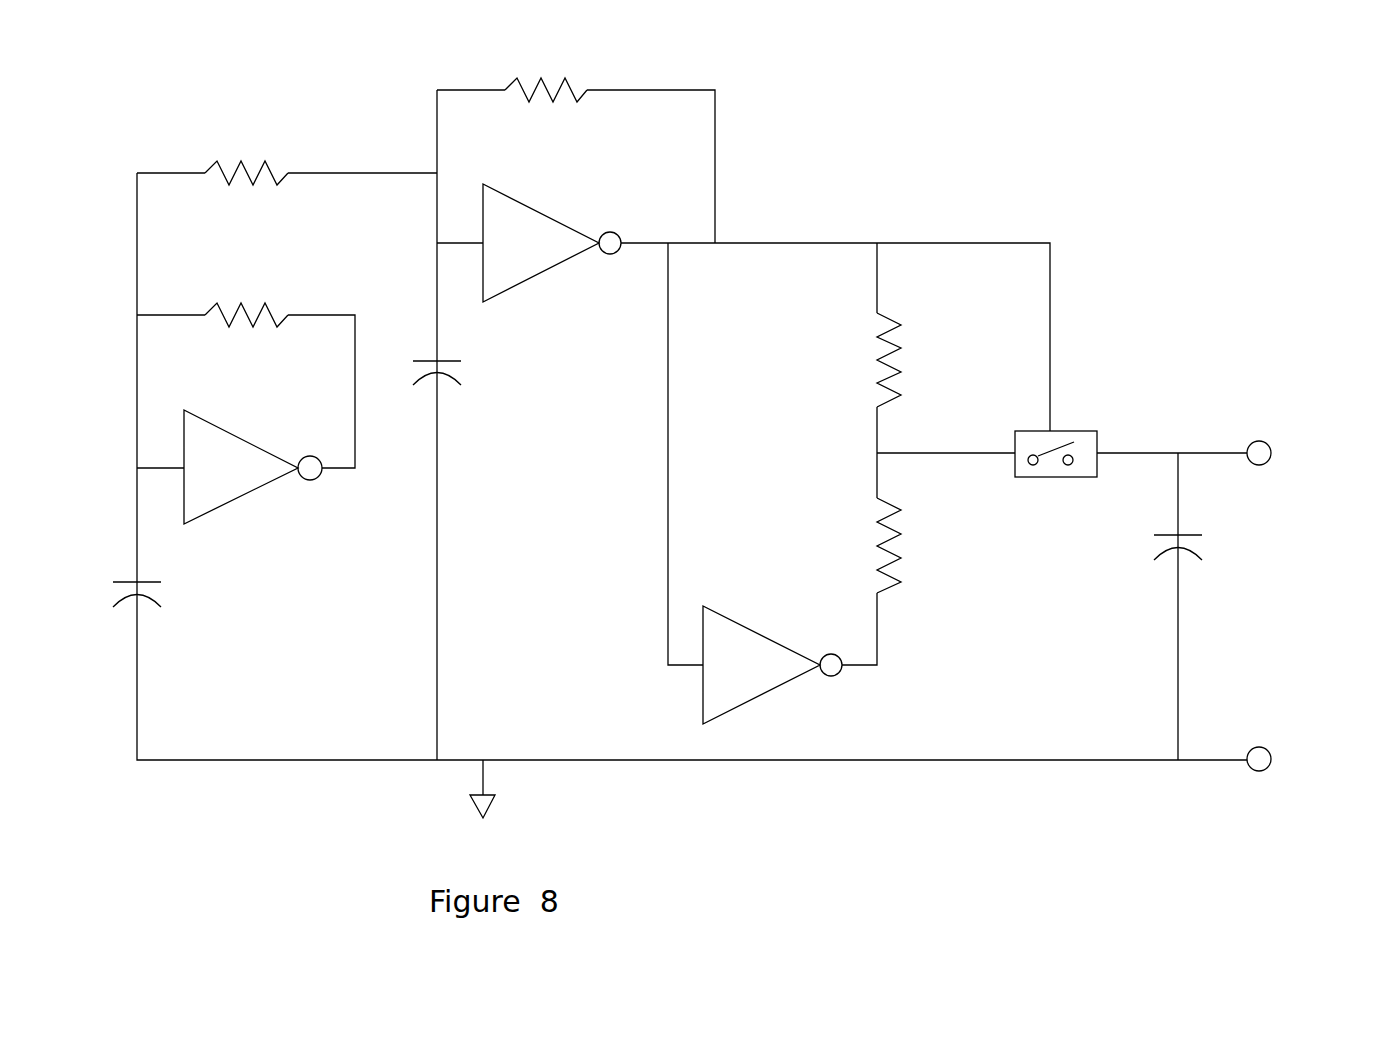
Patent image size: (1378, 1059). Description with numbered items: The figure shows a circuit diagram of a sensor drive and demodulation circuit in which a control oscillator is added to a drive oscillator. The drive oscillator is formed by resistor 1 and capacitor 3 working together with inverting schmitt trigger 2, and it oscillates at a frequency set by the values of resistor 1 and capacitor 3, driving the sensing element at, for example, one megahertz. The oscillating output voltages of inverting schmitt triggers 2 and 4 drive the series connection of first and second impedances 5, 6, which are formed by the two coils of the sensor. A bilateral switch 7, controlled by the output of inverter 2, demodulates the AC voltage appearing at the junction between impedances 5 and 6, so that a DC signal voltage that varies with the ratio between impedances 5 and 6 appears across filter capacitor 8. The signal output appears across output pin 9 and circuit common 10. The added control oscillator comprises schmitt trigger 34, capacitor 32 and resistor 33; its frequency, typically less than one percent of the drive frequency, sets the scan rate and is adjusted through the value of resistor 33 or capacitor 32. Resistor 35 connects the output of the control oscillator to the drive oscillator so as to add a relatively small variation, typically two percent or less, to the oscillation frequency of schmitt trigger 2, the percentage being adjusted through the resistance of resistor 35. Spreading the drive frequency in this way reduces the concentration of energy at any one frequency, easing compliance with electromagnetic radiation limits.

The resistor 1 is at (541, 71).
The inverting schmitt trigger 2 is at (537, 196).
The capacitor 3 is at (449, 352).
The inverting schmitt trigger 4 is at (765, 621).
The first impedance 5 is at (868, 339).
The second impedance 6 is at (869, 526).
The bilateral switch 7 is at (1065, 421).
The filter capacitor 8 is at (1187, 522).
The output pin 9 is at (1269, 435).
The circuit common 10 is at (1272, 741).
The capacitor 32 is at (150, 576).
The resistor 33 is at (241, 296).
The schmitt trigger 34 is at (237, 421).
The resistor 35 is at (263, 150).